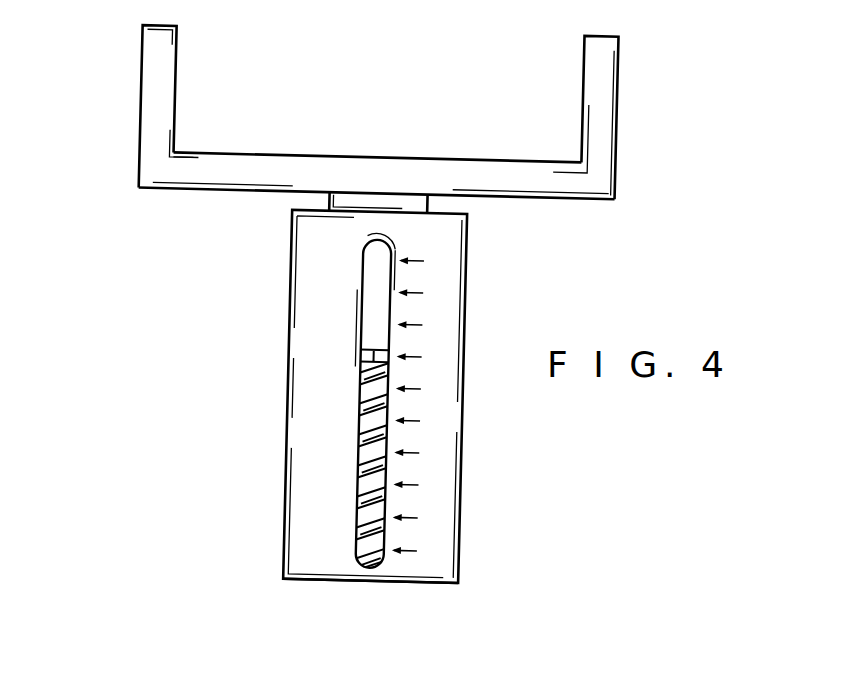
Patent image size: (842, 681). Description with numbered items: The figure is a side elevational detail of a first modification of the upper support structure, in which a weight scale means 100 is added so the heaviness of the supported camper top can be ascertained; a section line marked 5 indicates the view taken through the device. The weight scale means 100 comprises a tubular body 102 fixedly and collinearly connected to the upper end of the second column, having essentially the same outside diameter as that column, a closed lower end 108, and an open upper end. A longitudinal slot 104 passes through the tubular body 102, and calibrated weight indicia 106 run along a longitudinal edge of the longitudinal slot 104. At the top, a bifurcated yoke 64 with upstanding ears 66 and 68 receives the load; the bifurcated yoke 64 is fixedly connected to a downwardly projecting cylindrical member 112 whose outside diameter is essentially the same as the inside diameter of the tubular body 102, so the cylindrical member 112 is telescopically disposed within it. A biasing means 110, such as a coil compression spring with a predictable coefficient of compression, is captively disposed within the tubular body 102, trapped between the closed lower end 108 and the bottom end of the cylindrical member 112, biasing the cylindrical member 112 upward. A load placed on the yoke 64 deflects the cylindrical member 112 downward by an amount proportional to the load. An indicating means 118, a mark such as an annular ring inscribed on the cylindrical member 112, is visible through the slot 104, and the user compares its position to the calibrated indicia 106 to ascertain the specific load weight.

The section line 5- 5 is at (377, 160).
The bifurcated yoke 64 is at (222, 175).
The upstanding ear 66 is at (603, 77).
The upstanding ear 68 is at (162, 54).
The weight scale means 100 is at (266, 508).
The tubular body 102 is at (460, 553).
The longitudinal slot 104 is at (370, 266).
The calibrated weight indicia 106 is at (400, 453).
The closed lower end 108 is at (352, 580).
The biasing means 110 is at (373, 510).
The cylindrical member 112 is at (377, 297).
The indicating means 118 is at (363, 352).